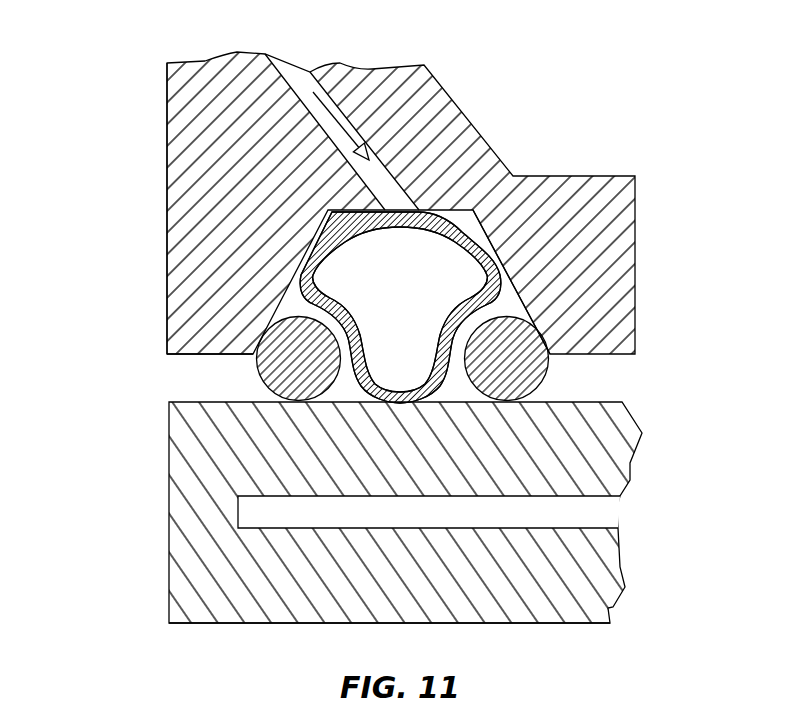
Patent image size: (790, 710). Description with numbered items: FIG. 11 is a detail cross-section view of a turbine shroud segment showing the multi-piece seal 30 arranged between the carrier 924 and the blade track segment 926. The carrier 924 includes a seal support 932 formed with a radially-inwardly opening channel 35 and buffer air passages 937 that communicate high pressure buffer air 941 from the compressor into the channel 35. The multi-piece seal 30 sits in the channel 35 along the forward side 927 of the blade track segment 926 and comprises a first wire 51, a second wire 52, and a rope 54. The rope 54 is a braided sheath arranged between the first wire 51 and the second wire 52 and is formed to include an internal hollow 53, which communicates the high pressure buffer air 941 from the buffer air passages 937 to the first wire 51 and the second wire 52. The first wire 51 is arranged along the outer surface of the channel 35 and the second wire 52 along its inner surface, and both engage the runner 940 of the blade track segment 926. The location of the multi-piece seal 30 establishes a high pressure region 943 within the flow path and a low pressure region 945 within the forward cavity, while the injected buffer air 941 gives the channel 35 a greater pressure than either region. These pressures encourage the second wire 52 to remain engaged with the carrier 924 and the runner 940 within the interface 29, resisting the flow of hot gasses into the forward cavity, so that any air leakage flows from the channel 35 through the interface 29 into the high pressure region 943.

The carrier 924 is at (120, 92).
The seal support 932 is at (165, 157).
The buffer air passages 937 is at (298, 98).
The high pressure buffer air 941 is at (342, 127).
The rope 54 is at (459, 231).
The radially-inwardly opening channel 35 is at (514, 285).
The low pressure region 945 is at (705, 367).
The multi-piece seal 30 is at (286, 265).
The internal hollow 53 is at (413, 293).
The first wire 51 is at (255, 372).
The second wire 52 is at (550, 368).
The interface 29 is at (138, 378).
The high pressure region 943 is at (120, 487).
The blade track segment 926 is at (337, 552).
The forward side 927 is at (237, 625).
The runner 940 is at (578, 623).